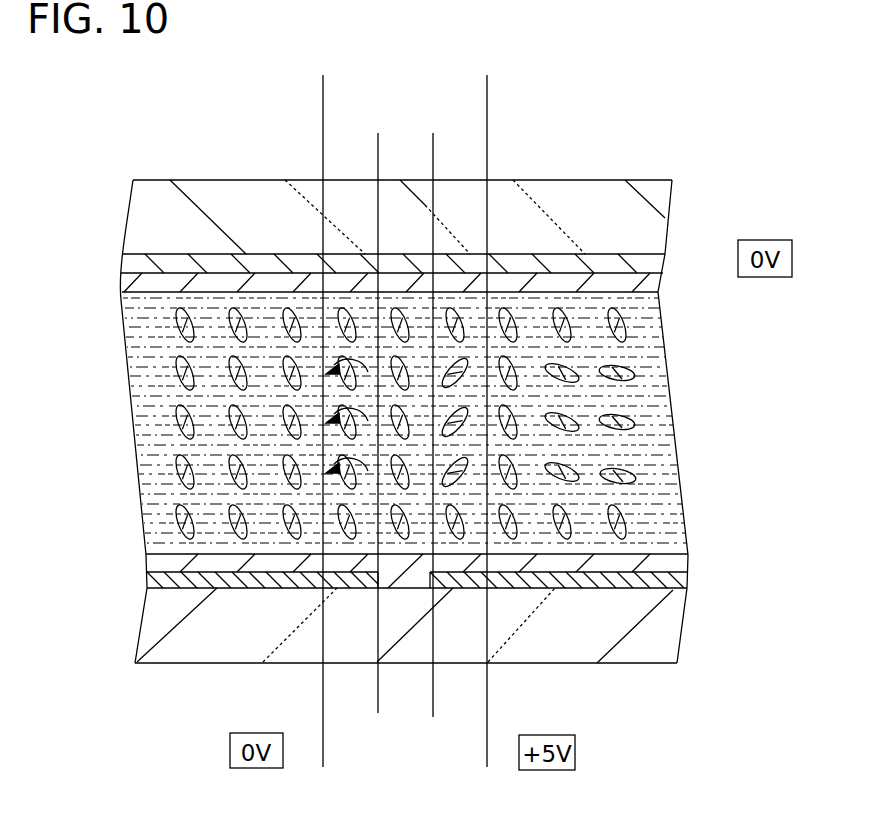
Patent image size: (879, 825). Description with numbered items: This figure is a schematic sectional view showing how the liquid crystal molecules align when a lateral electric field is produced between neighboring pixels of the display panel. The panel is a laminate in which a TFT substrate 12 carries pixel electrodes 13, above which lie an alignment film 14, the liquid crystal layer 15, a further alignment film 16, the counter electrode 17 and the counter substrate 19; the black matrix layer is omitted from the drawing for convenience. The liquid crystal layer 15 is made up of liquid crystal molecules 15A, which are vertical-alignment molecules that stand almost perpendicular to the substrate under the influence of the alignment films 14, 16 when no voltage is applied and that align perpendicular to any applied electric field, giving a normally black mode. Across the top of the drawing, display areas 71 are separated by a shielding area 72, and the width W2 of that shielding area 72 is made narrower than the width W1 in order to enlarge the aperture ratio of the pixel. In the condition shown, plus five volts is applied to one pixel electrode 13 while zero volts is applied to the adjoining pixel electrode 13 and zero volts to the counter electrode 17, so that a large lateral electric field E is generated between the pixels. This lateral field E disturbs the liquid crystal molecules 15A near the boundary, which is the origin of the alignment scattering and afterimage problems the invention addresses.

The TFT substrate 12 is at (673, 635).
The pixel electrode 13 is at (253, 588).
The alignment film 14 is at (690, 567).
The liquid crystal layer 15 is at (472, 424).
The liquid crystal molecule 15A is at (683, 475).
The alignment film 16 is at (652, 280).
The counter electrode 17 is at (655, 263).
The counter substrate 19 is at (657, 218).
The lateral electric field E is at (122, 343).
The display area 71 is at (673, 149).
The shielding area 72 is at (405, 104).
The width W1 is at (487, 755).
The width W2 is at (433, 692).